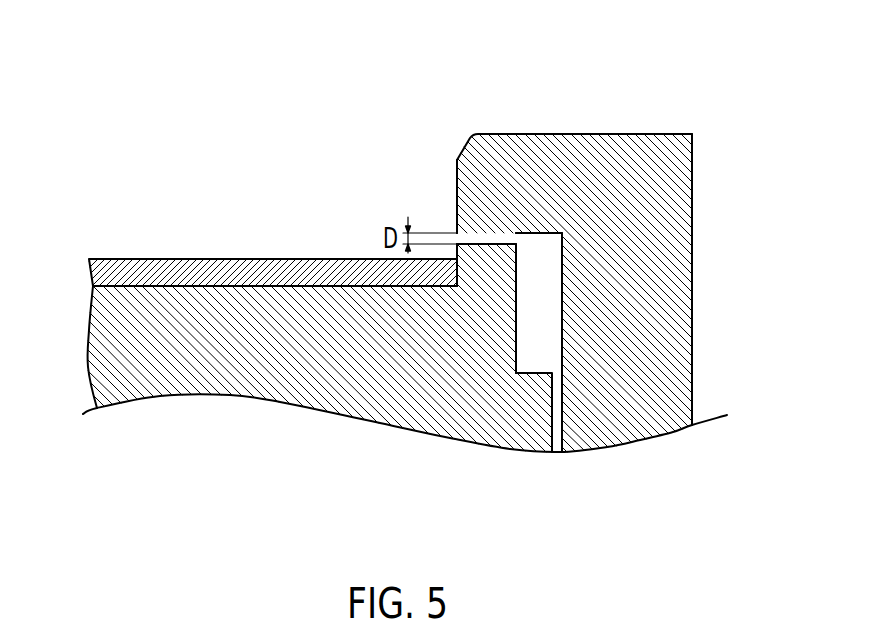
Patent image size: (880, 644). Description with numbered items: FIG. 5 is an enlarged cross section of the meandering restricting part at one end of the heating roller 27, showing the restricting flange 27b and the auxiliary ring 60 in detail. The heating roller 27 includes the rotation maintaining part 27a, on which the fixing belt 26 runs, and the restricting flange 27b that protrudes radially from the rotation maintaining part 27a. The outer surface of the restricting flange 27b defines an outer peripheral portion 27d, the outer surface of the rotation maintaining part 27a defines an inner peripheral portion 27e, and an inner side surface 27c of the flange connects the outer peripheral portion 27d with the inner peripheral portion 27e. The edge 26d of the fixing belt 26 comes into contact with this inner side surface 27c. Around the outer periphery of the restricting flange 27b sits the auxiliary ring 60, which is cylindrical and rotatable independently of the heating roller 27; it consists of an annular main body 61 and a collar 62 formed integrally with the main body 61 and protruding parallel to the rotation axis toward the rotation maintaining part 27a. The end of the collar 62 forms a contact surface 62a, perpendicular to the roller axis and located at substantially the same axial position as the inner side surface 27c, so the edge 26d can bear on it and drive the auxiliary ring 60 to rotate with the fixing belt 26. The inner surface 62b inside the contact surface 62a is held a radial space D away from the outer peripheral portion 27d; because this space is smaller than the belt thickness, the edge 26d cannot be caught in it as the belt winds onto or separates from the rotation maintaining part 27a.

The fixing belt 26 is at (105, 258).
The edge of the fixing belt 26d is at (457, 277).
The heating roller 27 is at (90, 338).
The rotation maintaining part 27a is at (145, 285).
The restricting flange 27b is at (518, 239).
The inner side surface 27c is at (457, 273).
The outer peripheral portion 27d is at (487, 244).
The inner peripheral portion 27e is at (457, 280).
The auxiliary ring 60 is at (757, 72).
The main body 61 is at (692, 157).
The collar 62 is at (663, 134).
The contact surface 62a is at (457, 173).
The inner surface 62b is at (540, 233).